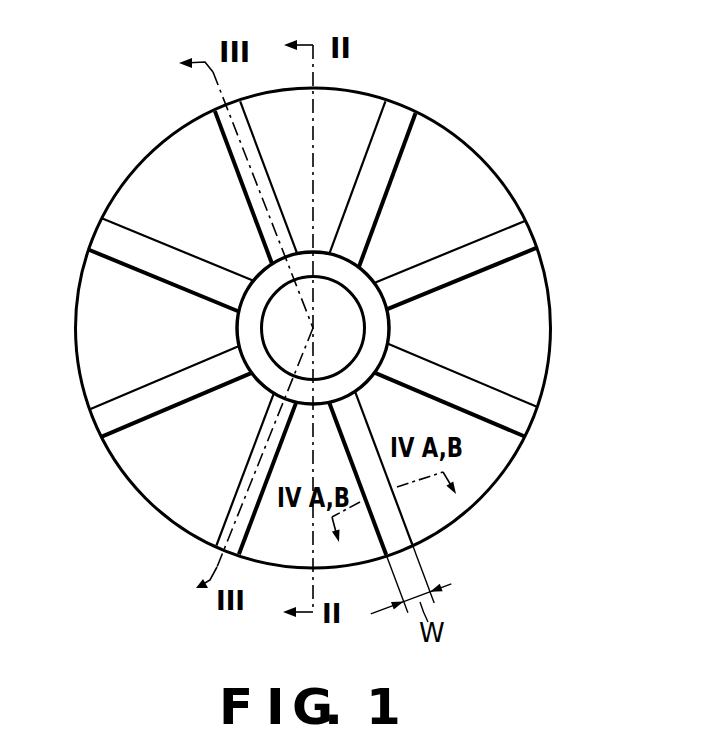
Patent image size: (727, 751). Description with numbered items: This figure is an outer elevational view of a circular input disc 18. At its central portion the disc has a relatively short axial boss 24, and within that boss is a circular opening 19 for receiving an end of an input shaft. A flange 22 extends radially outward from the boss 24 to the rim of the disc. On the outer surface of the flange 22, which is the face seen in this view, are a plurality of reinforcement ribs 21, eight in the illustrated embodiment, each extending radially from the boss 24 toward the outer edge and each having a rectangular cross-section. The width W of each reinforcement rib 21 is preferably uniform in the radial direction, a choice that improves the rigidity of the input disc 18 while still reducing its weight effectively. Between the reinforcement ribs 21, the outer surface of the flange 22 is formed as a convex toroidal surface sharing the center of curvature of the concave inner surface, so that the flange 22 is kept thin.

The input disc 18 is at (557, 330).
The circular opening 19 is at (279, 294).
The reinforcement ribs 21 is at (388, 152).
The flange 22 is at (157, 178).
The axial boss 24 is at (357, 278).